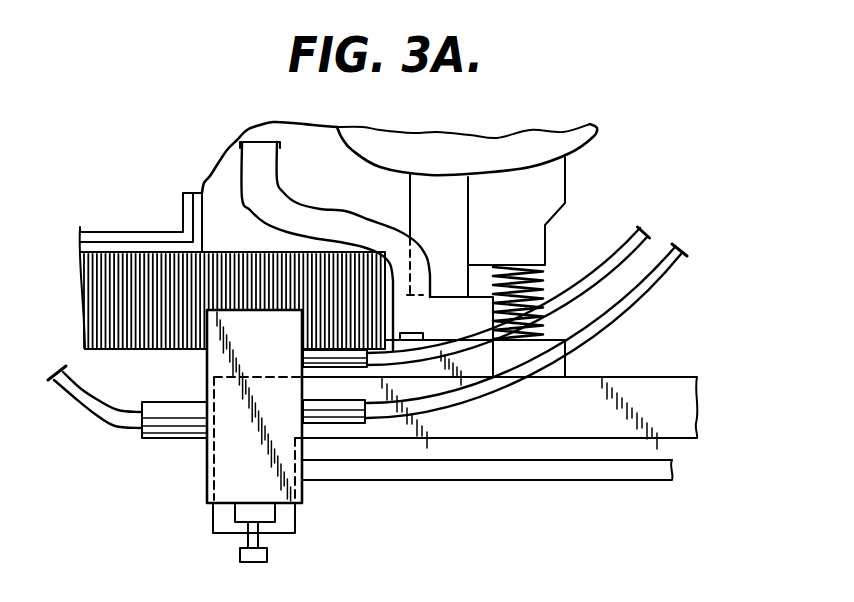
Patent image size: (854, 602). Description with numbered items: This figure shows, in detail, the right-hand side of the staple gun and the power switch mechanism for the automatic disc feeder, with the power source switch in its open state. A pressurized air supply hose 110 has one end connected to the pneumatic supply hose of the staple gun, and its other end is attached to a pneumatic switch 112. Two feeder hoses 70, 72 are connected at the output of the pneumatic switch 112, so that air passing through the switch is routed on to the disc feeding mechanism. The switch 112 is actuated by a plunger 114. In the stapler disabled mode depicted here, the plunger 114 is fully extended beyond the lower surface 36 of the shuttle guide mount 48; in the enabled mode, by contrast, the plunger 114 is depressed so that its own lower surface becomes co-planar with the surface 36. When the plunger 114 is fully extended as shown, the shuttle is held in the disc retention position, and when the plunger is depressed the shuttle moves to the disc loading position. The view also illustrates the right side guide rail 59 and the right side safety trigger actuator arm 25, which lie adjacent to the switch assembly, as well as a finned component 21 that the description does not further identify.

The finned heat sink 21 is at (163, 350).
The right side safety trigger actuator arm 25 is at (285, 188).
The lower surface 36 is at (280, 534).
The shuttle guide mount 48 is at (617, 440).
The right side guide rail 59 is at (505, 480).
The feeder hose 70 is at (613, 255).
The feeder hose 72 is at (648, 297).
The pressurized air supply hose 110 is at (68, 393).
The pneumatic switch 112 is at (205, 463).
The plunger 114 is at (240, 557).